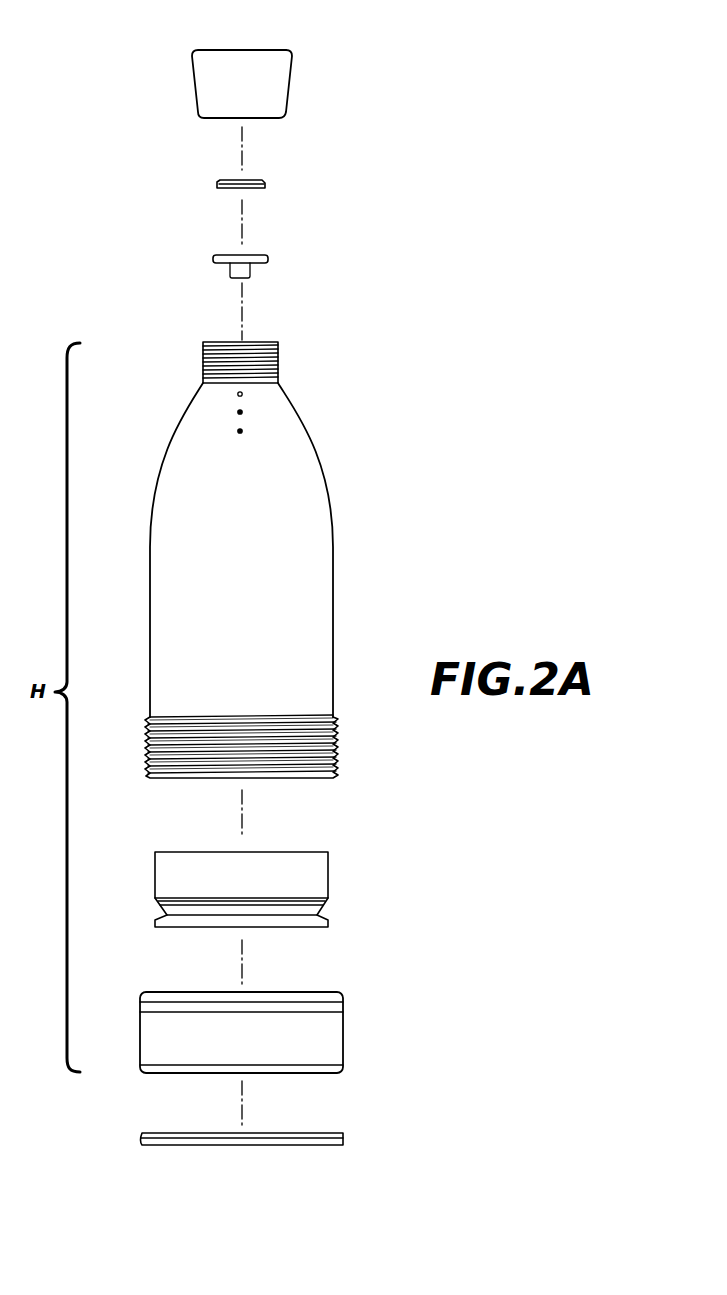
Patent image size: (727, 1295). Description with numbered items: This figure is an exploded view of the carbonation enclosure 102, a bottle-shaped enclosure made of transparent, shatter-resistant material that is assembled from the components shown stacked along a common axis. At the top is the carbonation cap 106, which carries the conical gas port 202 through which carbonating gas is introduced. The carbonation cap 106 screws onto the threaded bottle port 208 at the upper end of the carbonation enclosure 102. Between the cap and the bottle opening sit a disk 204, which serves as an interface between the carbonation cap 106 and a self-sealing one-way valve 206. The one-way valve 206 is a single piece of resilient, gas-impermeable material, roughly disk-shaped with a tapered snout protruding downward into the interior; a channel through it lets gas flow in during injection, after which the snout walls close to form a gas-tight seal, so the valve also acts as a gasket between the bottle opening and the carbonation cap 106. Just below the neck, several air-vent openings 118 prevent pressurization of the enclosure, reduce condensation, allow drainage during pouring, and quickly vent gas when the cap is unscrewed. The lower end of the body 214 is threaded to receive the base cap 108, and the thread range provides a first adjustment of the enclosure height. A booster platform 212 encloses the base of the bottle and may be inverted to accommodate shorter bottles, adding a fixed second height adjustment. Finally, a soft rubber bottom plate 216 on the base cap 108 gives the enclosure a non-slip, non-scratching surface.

The conical gas port 202 is at (250, 49).
The carbonation cap 106 is at (292, 87).
The disk 204 is at (265, 184).
The self-sealing one-way valve 206 is at (268, 260).
The bottle port 208 is at (278, 353).
The air-vent openings 118 is at (242, 394).
The carbonation enclosure 102 is at (328, 488).
The body 214 is at (336, 738).
The booster platform 212 is at (328, 882).
The base cap 108 is at (343, 1032).
The bottom plate 216 is at (343, 1140).